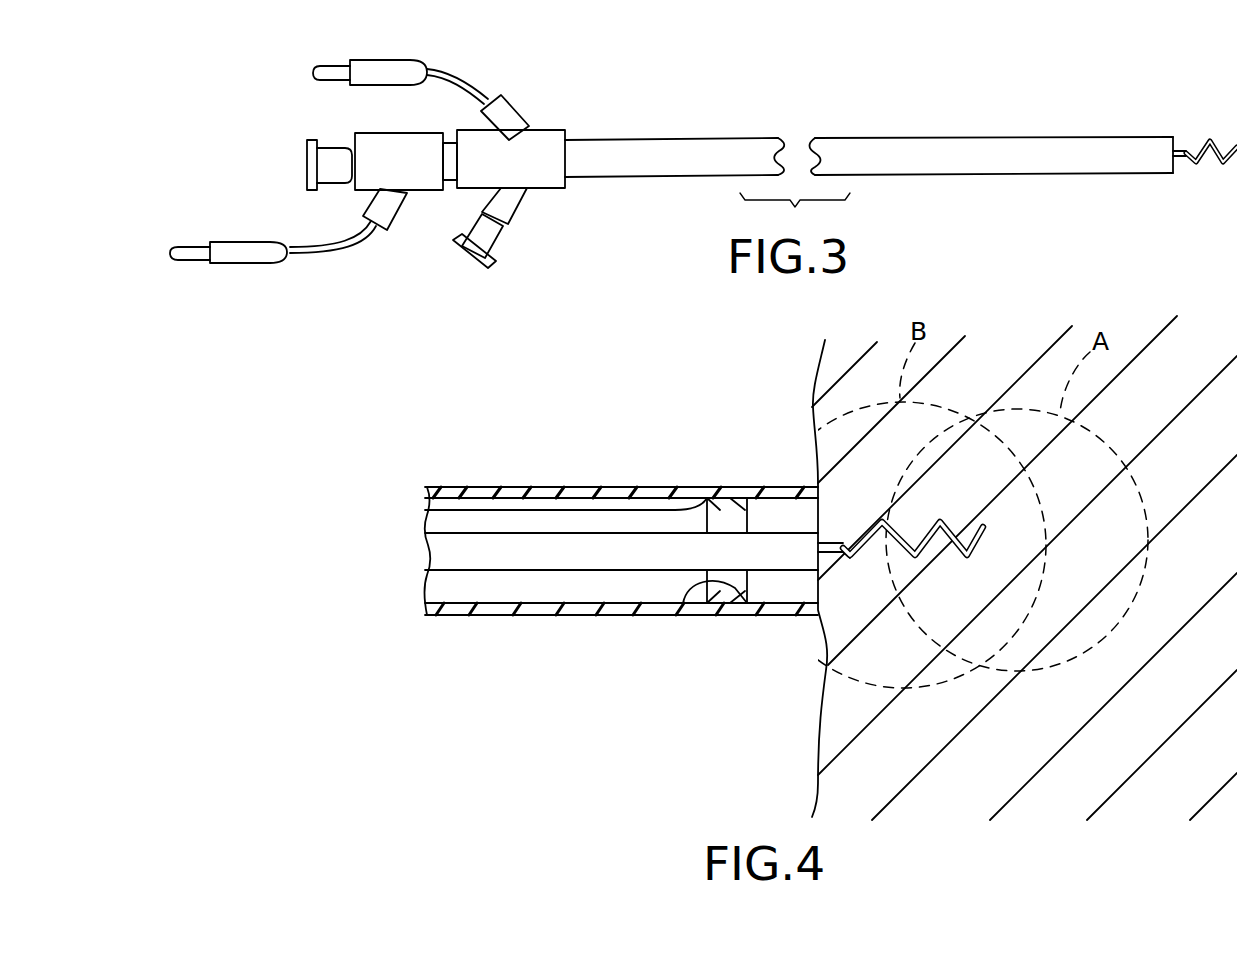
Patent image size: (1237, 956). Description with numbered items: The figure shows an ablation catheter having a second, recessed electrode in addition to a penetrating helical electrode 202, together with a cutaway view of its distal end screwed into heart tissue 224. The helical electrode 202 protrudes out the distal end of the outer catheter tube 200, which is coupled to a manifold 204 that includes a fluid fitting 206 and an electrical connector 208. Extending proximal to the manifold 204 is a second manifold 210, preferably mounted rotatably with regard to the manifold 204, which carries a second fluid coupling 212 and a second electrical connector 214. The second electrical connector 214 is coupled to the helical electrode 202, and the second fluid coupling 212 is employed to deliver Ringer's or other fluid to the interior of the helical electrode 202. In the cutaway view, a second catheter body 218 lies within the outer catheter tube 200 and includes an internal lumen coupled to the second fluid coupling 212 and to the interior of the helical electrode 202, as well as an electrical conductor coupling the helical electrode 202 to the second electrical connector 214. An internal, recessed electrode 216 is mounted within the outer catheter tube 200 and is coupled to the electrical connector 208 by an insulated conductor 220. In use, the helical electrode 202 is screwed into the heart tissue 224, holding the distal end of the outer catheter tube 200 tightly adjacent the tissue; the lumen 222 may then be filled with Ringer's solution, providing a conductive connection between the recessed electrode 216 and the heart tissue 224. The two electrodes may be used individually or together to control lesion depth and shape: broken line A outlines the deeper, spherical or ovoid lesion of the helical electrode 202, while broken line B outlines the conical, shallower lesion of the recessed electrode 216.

In FIG. 3, the outer catheter tube 200 is at (722, 137).
In FIG. 4, the outer catheter tube 200 is at (680, 498).
In FIG. 3, the helical electrode 202 is at (1210, 140).
In FIG. 4, the helical electrode 202 is at (898, 560).
In FIG. 3, the manifold 204 is at (543, 133).
In FIG. 3, the fluid fitting 206 is at (503, 243).
In FIG. 3, the electrical connector 208 is at (377, 60).
In FIG. 3, the second manifold 210 is at (427, 190).
In FIG. 3, the second fluid coupling 212 is at (303, 163).
In FIG. 3, the second electrical connector 214 is at (235, 265).
In FIG. 4, the recessed electrode 216 is at (683, 603).
In FIG. 4, the second catheter body 218 is at (590, 560).
In FIG. 4, the insulated conductor 220 is at (617, 508).
In FIG. 4, the lumen 222 is at (485, 588).
In FIG. 4, the heart tissue 224 is at (855, 713).